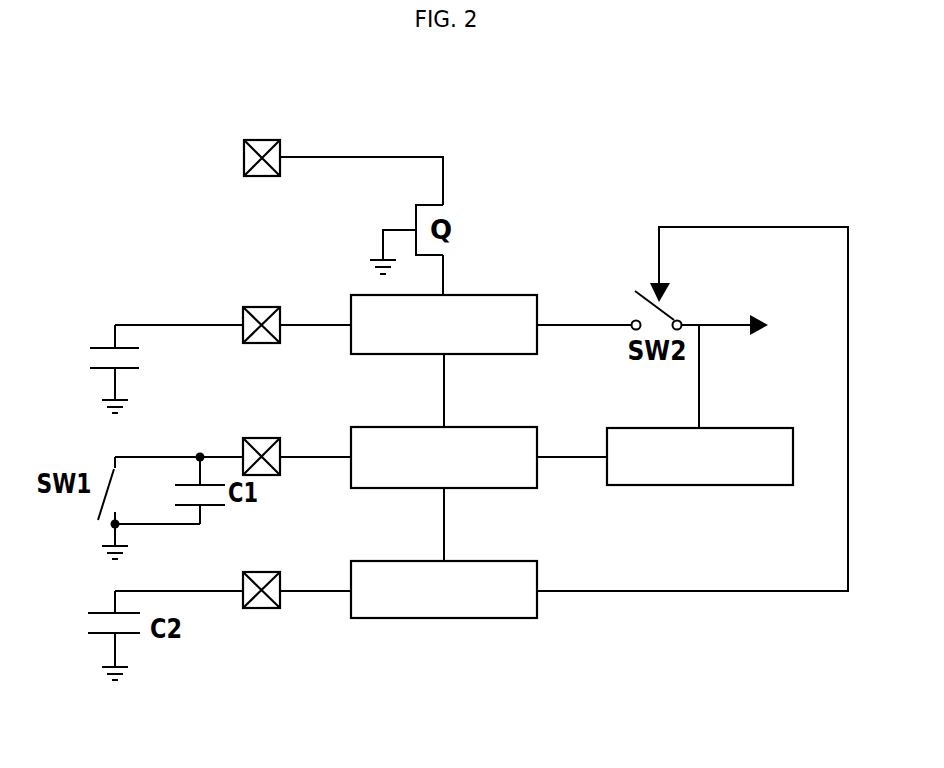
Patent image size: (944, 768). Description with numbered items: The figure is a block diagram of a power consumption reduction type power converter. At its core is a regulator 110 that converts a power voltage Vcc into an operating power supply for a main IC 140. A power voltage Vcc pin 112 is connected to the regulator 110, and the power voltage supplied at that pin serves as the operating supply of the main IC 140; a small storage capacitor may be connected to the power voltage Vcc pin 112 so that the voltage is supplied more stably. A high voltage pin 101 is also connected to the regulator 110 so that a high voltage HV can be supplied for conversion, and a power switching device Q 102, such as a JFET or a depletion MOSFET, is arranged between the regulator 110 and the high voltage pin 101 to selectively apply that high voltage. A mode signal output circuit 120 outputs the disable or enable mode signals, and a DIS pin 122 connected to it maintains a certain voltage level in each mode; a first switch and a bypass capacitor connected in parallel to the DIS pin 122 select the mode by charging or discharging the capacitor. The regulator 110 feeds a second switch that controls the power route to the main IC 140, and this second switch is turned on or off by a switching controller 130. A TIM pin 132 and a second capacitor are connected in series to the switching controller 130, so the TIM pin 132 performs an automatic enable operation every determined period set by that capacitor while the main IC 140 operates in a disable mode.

The high voltage pin 101 is at (262, 140).
The power switching device Q 102 is at (452, 222).
The regulator 110 is at (517, 295).
The power voltage Vcc pin 112 is at (262, 307).
The mode signal output circuit 120 is at (517, 427).
The DIS pin 122 is at (262, 438).
The switching controller 130 is at (517, 561).
The TIM pin 132 is at (262, 572).
The main IC 140 is at (782, 428).